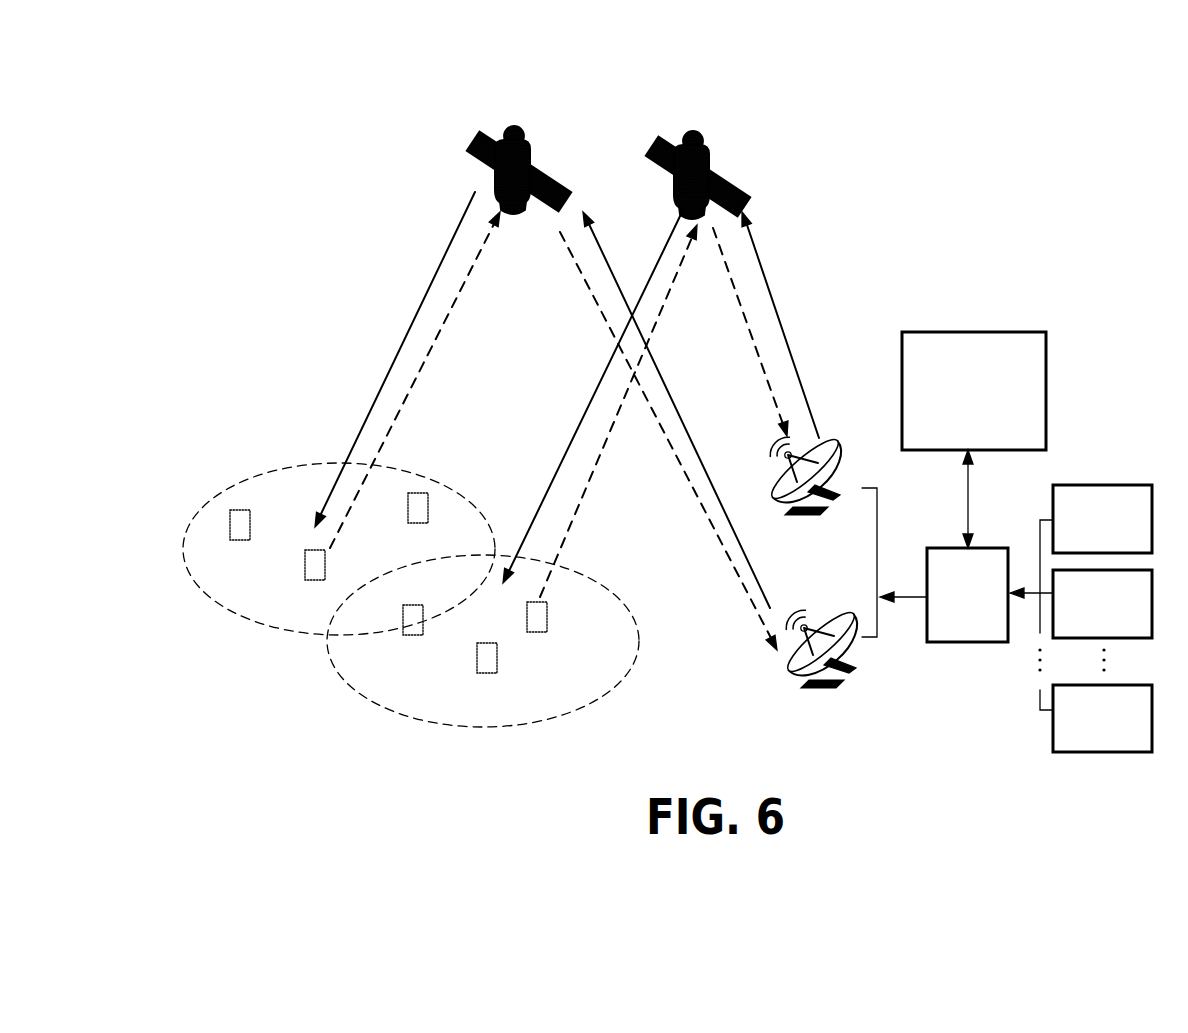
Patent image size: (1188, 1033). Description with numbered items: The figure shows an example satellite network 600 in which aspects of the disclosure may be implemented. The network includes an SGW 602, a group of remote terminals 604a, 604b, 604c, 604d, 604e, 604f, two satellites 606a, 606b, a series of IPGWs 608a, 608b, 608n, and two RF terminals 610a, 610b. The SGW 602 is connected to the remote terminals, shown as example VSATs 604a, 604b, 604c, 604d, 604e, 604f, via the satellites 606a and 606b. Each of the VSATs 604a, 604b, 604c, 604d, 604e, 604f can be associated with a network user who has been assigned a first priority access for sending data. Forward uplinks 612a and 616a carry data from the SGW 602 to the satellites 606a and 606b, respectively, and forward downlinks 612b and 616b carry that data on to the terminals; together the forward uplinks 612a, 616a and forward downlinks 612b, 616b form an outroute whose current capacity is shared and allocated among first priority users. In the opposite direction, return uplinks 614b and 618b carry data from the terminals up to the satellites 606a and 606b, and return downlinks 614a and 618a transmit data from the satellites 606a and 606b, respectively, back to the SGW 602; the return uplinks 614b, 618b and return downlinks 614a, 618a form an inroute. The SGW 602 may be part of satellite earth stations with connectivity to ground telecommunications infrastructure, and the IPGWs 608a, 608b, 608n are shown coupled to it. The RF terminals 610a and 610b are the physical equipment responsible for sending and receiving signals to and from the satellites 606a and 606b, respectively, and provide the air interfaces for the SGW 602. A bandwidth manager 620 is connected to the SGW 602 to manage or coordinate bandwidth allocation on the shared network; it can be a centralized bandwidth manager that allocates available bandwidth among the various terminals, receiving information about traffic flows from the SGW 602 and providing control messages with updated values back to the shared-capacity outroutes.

The satellite network 600 is at (895, 128).
The SGW 602 is at (967, 595).
The remote terminal 604a is at (237, 538).
The remote terminal 604b is at (312, 578).
The remote terminal 604c is at (415, 520).
The remote terminal 604d is at (411, 633).
The remote terminal 604e is at (486, 673).
The remote terminal 604f is at (542, 630).
The satellite 606a is at (530, 147).
The satellite 606b is at (712, 162).
The IPGW 608a is at (1102, 519).
The IPGW 608b is at (1102, 604).
The IPGW 608n is at (1102, 718).
The RF terminal 610a is at (840, 463).
The RF terminal 610b is at (850, 652).
The forward uplink 612a is at (676, 410).
The forward downlink 612b is at (395, 359).
The return downlink 614a is at (668, 441).
The return uplink 614b is at (415, 380).
The forward uplink 616a is at (780, 325).
The forward downlink 616b is at (593, 396).
The return downlink 618a is at (751, 332).
The return uplink 618b is at (618, 411).
The bandwidth manager 620 is at (974, 391).